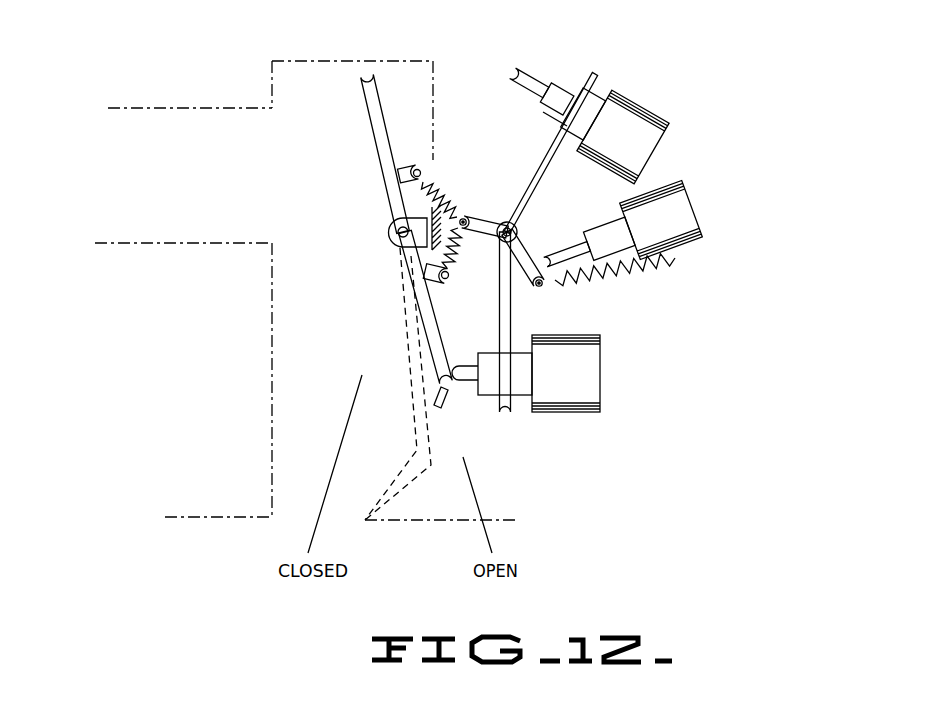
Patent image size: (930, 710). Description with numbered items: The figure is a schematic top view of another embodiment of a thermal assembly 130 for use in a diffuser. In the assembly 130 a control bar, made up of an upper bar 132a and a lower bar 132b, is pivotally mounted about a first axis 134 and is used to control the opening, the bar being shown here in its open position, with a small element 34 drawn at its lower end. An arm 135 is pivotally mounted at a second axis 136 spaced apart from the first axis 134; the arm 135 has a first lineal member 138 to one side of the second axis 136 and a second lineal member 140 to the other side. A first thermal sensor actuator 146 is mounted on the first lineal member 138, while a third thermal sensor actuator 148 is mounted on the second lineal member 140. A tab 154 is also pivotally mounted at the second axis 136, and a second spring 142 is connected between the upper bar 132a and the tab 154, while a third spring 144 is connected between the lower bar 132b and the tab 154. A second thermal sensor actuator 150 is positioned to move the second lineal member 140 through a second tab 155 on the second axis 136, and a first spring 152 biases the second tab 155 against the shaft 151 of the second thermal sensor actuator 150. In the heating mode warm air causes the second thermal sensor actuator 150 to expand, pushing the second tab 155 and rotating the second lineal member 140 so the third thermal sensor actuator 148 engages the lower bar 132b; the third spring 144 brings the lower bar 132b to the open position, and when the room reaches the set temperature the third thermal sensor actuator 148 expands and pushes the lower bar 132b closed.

The latch tab 34 is at (443, 389).
The thermal assembly 130 is at (368, 251).
The upper bar 132a is at (376, 146).
The lower bar 132b is at (419, 327).
The first axis 134 is at (397, 231).
The arm 135 is at (532, 192).
The second axis 136 is at (517, 232).
The first lineal member 138 is at (597, 73).
The second lineal member 140 is at (502, 418).
The second spring 142 is at (427, 183).
The third spring 144 is at (453, 269).
The first thermal sensor actuator 146 is at (683, 96).
The third thermal sensor actuator 148 is at (598, 380).
The second thermal sensor actuator 150 is at (720, 172).
The shaft 151 is at (582, 253).
The first spring 152 is at (678, 258).
The tab 154 is at (483, 213).
The second tab 155 is at (533, 263).